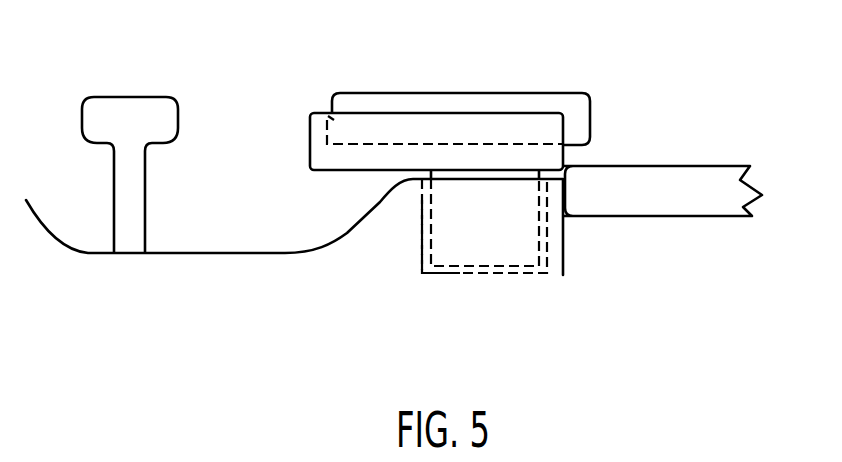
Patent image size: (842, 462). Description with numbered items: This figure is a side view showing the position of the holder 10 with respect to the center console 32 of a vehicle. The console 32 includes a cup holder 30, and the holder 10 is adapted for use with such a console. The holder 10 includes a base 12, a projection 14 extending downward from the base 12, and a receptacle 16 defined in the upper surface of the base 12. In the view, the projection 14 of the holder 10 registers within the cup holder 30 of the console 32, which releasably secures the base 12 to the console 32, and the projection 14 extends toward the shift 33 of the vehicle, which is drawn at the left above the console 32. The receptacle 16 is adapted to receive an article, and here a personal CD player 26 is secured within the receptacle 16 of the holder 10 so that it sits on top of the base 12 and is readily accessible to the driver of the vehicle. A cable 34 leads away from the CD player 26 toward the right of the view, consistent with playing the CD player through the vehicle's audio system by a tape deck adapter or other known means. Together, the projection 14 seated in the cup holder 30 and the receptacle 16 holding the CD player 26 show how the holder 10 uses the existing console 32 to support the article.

The holder 10 is at (305, 134).
The base 12 is at (347, 160).
The projection 14 is at (510, 243).
The receptacle 16 is at (330, 117).
The personal CD player 26 is at (570, 93).
The cup holder 30 is at (422, 247).
The console 32 is at (260, 261).
The shift 33 is at (128, 115).
The cable 34 is at (697, 200).